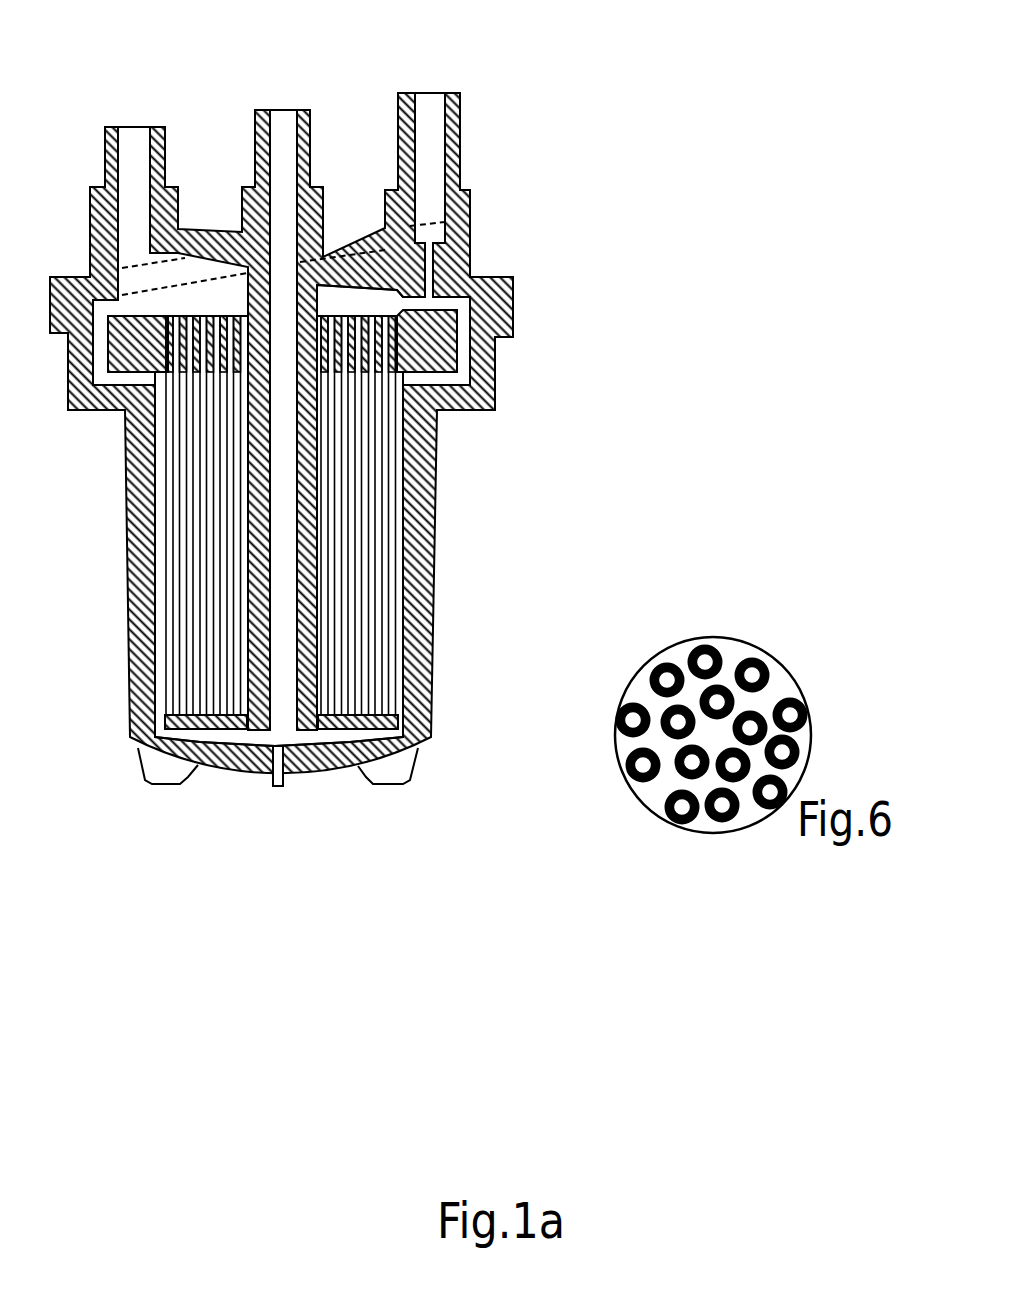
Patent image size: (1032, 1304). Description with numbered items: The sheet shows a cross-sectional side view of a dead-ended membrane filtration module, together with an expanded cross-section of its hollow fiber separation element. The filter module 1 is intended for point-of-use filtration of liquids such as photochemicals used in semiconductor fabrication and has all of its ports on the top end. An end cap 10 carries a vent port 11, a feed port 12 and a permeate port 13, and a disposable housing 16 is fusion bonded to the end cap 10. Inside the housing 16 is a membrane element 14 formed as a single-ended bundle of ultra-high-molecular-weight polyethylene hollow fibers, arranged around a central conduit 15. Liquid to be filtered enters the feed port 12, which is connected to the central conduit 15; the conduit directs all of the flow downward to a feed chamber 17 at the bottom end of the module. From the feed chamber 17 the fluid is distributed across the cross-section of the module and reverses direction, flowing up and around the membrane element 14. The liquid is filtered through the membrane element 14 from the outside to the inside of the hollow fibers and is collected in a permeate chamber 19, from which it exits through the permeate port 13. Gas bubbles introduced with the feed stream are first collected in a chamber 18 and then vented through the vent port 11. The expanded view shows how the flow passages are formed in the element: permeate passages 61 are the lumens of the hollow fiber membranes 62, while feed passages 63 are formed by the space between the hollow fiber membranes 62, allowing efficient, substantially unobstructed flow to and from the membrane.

In FIG. 1A, the filter module 1 is at (320, 422).
In FIG. 1A, the end cap 10 is at (495, 260).
In FIG. 1A, the vent port 11 is at (405, 90).
In FIG. 1A, the feed port 12 is at (262, 108).
In FIG. 1A, the permeate port 13 is at (105, 122).
In FIG. 1A, the membrane element 14 is at (197, 522).
In FIG. 1A, the central conduit 15 is at (247, 642).
In FIG. 1A, the housing 16 is at (238, 772).
In FIG. 1A, the feed chamber 17 is at (220, 737).
In FIG. 1A, the gas collection chamber 18 is at (450, 376).
In FIG. 1A, the permeate chamber 19 is at (357, 305).
In FIG. 6, the permeate passages 61 is at (752, 676).
In FIG. 6, the hollow fiber membranes 62 is at (770, 661).
In FIG. 6, the feed passages 63 is at (782, 688).